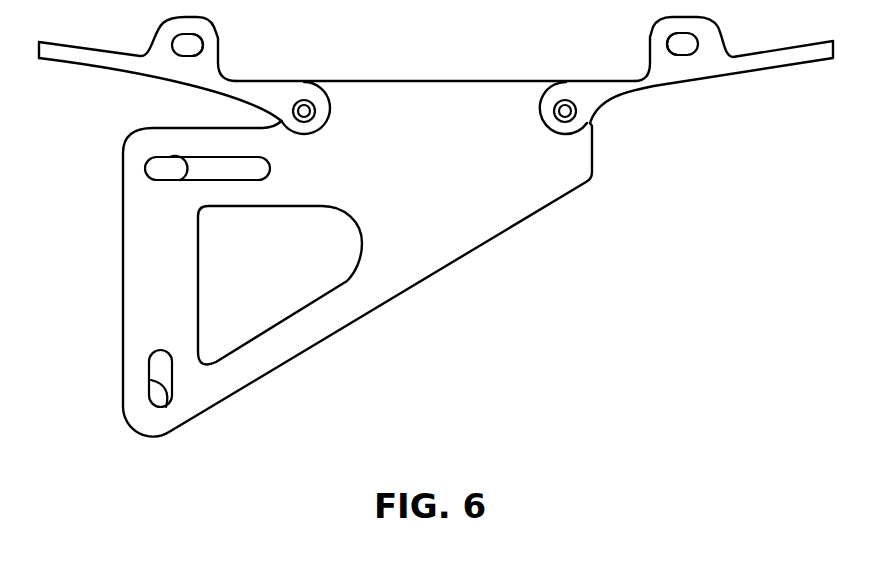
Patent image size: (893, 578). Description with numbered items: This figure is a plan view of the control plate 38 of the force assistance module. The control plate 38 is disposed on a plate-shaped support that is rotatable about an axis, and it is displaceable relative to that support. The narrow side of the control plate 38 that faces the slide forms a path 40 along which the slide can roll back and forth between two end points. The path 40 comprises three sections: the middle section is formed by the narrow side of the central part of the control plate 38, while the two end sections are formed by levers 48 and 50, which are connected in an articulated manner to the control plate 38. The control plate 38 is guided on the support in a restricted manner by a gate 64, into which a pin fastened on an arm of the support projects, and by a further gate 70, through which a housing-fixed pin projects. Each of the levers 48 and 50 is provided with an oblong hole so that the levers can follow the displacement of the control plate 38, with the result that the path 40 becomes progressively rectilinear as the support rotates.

The control plate 38 is at (405, 168).
The path 40 is at (412, 80).
The lever 48 is at (118, 68).
The lever 50 is at (738, 68).
The gate 64 is at (167, 402).
The further gate 70 is at (148, 162).